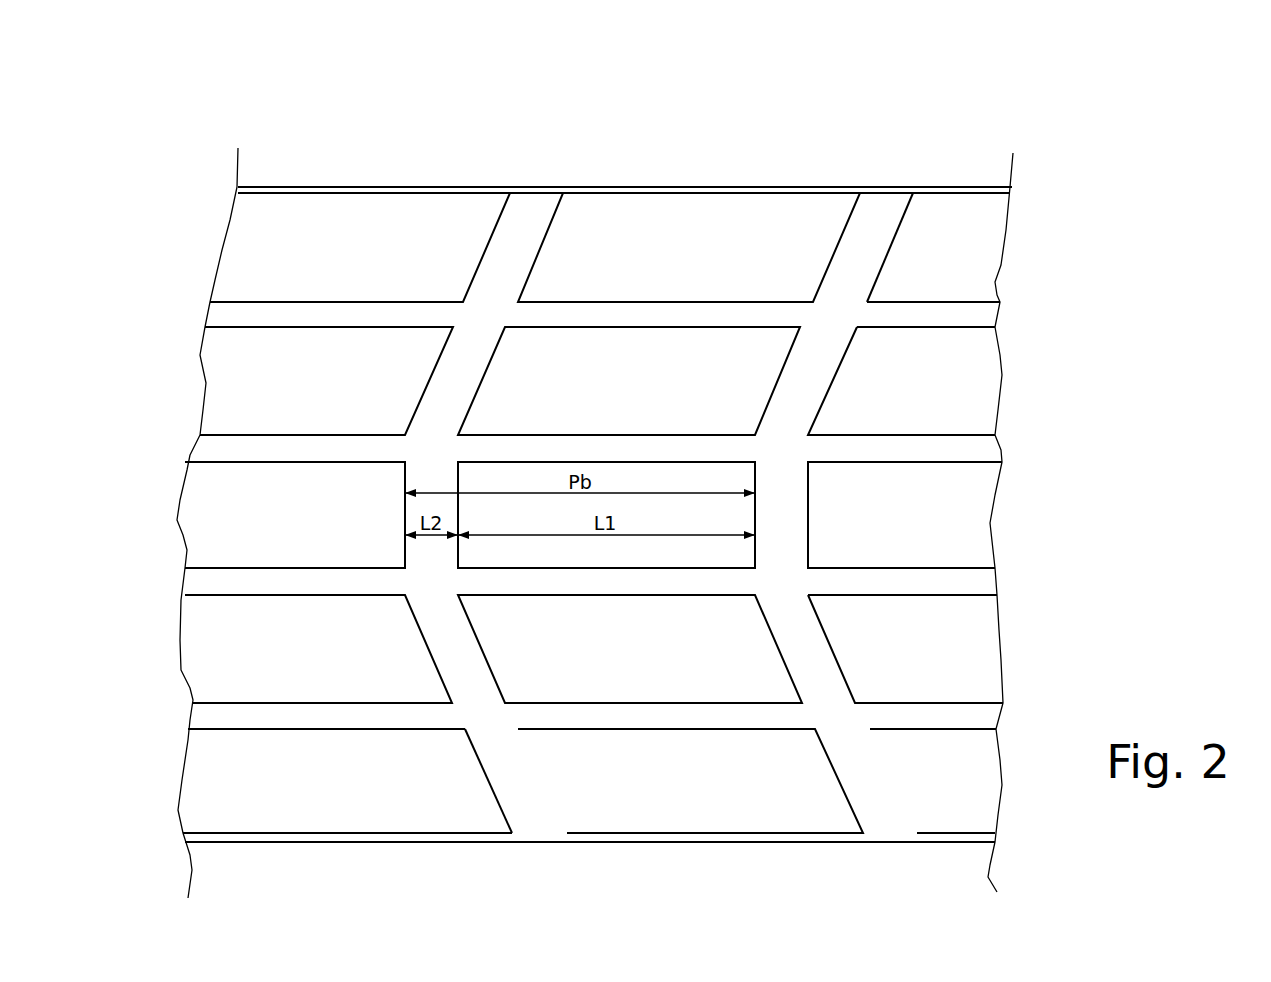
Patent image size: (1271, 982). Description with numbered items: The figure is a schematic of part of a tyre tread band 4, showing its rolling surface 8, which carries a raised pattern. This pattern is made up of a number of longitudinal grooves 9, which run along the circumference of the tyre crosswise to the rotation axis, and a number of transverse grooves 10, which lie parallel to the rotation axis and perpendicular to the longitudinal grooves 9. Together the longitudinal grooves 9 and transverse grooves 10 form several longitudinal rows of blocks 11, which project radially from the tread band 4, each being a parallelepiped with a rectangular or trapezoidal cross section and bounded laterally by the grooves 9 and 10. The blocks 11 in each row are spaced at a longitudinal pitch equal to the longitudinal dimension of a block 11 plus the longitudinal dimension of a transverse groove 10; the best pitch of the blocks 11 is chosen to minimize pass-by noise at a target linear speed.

The tread band 4 is at (625, 80).
The rolling surface 8 is at (354, 228).
The longitudinal grooves 9 is at (215, 582).
The transverse grooves 10 is at (873, 218).
The blocks 11 is at (757, 215).